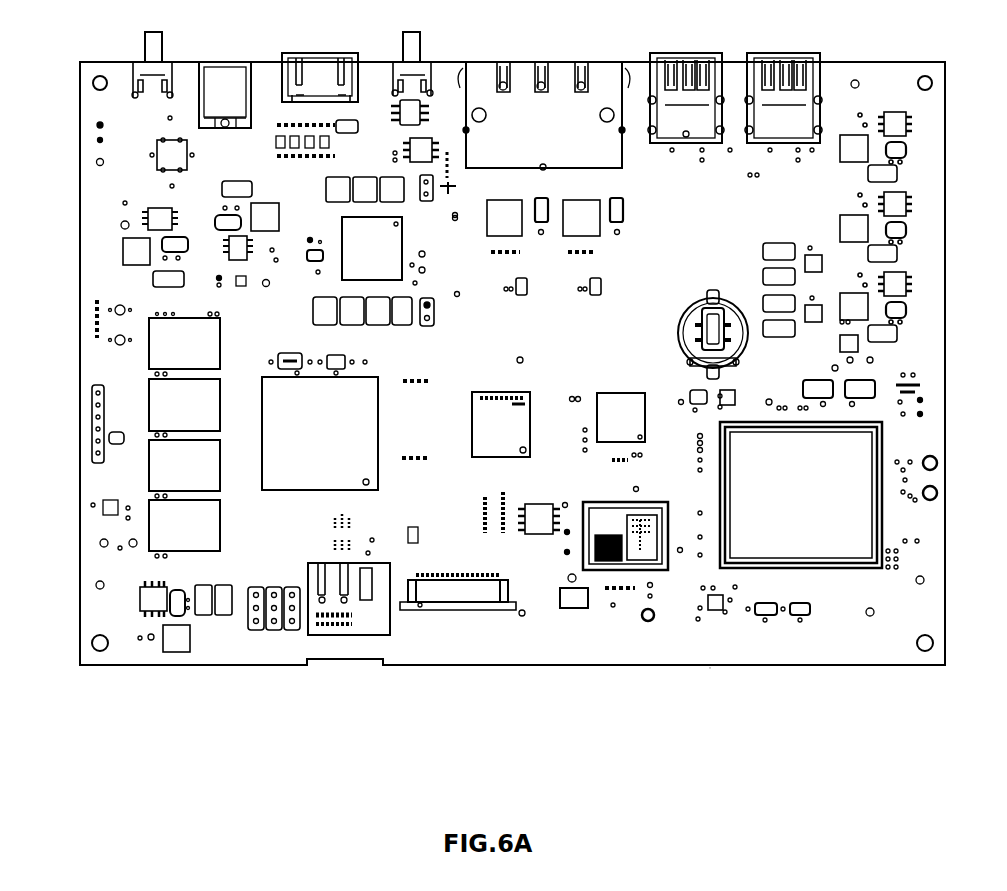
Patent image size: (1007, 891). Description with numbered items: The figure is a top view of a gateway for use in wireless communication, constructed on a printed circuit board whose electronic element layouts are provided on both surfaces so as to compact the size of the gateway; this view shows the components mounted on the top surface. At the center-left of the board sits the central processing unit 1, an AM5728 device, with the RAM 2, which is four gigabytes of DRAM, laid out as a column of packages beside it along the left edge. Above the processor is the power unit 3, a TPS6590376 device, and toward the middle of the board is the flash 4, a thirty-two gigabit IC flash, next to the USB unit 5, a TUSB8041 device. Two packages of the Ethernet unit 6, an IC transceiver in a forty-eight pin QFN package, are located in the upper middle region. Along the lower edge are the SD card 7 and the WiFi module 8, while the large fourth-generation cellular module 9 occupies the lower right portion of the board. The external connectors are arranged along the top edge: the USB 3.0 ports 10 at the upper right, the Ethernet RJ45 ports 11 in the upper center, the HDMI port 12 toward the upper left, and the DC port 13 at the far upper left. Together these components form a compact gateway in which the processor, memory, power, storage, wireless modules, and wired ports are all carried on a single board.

The central processing unit 1 is at (320, 440).
The RAM 2 is at (185, 342).
The power unit 3 is at (372, 250).
The flash 4 is at (500, 426).
The USB unit 5 is at (620, 418).
The Ethernet unit 6 is at (505, 220).
The SD card 7 is at (345, 625).
The WiFi module 8 is at (617, 562).
The 4G module 9 is at (800, 495).
The USB 3.0 ports 10 is at (688, 118).
The Ethernet RJ45 ports 11 is at (545, 130).
The HDMI port 12 is at (322, 90).
The DC port 13 is at (228, 95).